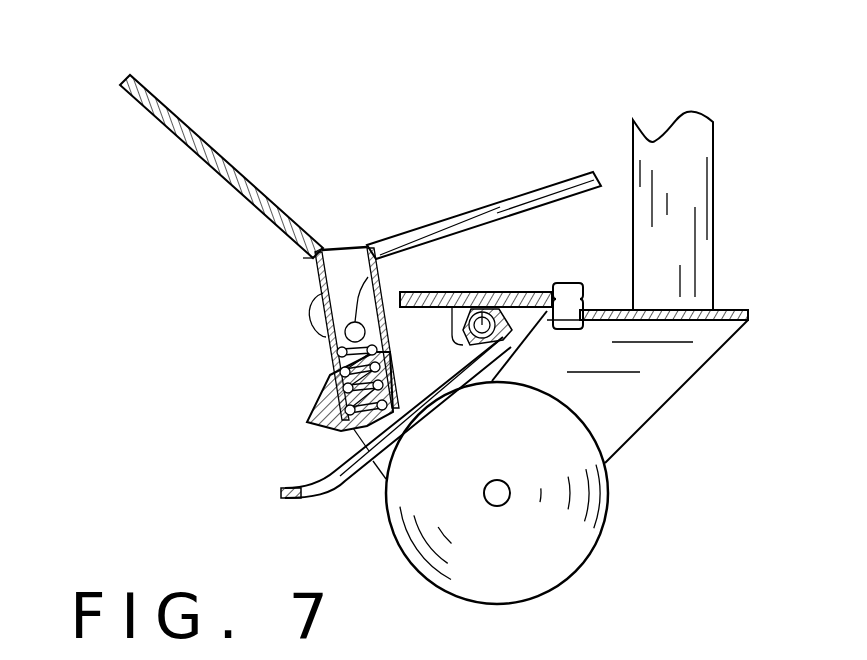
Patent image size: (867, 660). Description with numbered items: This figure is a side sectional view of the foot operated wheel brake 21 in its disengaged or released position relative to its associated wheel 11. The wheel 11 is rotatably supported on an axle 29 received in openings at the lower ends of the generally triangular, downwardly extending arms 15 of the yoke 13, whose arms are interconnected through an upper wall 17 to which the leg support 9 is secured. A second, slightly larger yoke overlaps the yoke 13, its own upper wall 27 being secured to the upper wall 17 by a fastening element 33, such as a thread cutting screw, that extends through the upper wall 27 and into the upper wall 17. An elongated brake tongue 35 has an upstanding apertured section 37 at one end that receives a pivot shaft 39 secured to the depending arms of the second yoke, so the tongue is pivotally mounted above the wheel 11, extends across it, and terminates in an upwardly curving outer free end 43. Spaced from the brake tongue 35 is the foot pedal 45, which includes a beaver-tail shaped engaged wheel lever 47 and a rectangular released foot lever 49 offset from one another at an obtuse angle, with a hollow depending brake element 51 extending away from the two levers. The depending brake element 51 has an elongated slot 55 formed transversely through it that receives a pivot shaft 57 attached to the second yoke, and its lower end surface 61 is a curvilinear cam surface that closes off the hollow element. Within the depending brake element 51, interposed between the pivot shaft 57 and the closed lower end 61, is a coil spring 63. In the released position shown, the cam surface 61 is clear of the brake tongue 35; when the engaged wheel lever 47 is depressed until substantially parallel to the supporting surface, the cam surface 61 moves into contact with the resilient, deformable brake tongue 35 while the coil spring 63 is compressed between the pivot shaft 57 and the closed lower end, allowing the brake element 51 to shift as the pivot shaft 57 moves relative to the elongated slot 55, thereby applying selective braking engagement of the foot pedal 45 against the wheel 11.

The foot operated wheel brake 21 is at (381, 126).
The engaged wheel lever 47 is at (233, 165).
The foot pedal 45 is at (288, 261).
The depending brake element 51 is at (316, 293).
The released foot lever 49 is at (500, 210).
The pivot shaft 57 is at (385, 270).
The lower end surface 61 is at (340, 427).
The elongated slot 55 is at (318, 333).
The coil spring 63 is at (330, 372).
The upper wall 27 is at (520, 292).
The fastening element 33 is at (568, 285).
The upper wall 17 is at (740, 310).
The leg support 9 is at (697, 190).
The yoke 13 is at (714, 371).
The arms 15 is at (627, 423).
The pivot shaft 39 is at (480, 307).
The upstanding apertured section 37 is at (452, 308).
The brake tongue 35 is at (345, 472).
The outer free end 43 is at (300, 500).
The wheel 11 is at (535, 558).
The axle 29 is at (493, 493).